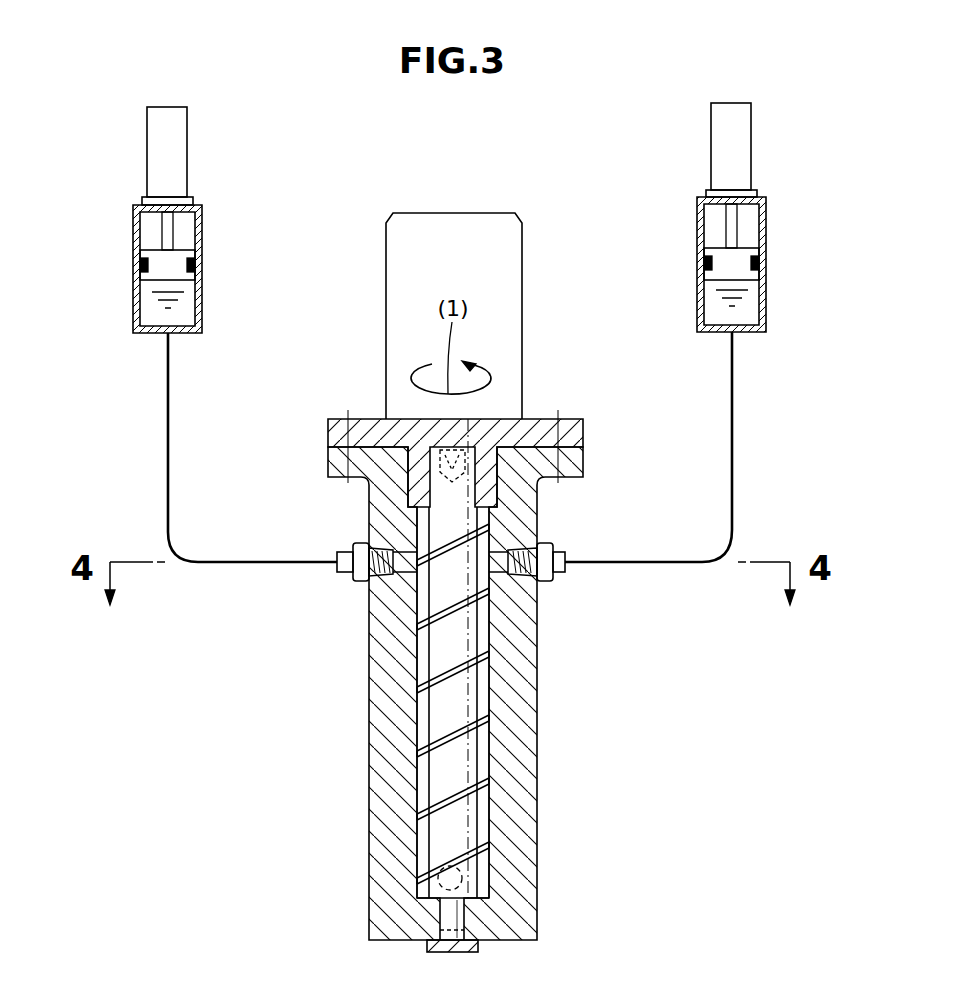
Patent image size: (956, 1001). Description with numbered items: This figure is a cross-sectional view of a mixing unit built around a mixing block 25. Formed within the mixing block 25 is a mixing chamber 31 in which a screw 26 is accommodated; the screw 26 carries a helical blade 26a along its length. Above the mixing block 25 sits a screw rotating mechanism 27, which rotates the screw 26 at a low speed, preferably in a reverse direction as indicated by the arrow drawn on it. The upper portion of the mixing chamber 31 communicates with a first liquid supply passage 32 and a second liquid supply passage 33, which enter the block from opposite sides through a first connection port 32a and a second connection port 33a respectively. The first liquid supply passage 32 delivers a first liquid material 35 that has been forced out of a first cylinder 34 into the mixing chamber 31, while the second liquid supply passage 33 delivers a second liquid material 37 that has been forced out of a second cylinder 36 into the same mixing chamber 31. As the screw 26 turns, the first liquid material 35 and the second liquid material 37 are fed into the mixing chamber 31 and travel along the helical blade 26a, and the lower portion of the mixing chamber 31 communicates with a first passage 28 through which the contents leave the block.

The mixing block 25 is at (535, 797).
The screw 26 is at (449, 658).
The helical blade 26a is at (450, 665).
The screw rotating mechanism 27 is at (522, 310).
The first passage 28 is at (447, 888).
The mixing chamber 31 is at (418, 792).
The first liquid supply passage 32 is at (168, 482).
The first connection port 32a is at (402, 552).
The second liquid supply passage 33 is at (732, 482).
The second connection port 33a is at (503, 572).
The first cylinder 34 is at (202, 237).
The first liquid material 35 is at (185, 300).
The second cylinder 36 is at (766, 225).
The second liquid material 37 is at (748, 300).